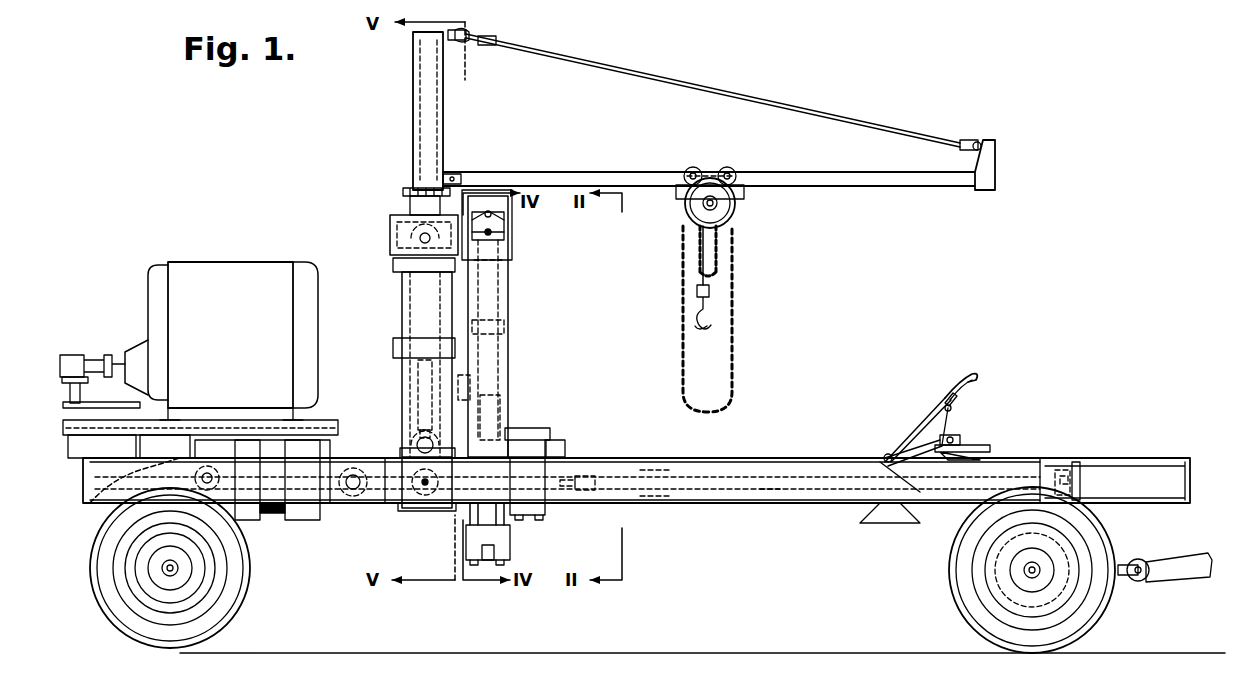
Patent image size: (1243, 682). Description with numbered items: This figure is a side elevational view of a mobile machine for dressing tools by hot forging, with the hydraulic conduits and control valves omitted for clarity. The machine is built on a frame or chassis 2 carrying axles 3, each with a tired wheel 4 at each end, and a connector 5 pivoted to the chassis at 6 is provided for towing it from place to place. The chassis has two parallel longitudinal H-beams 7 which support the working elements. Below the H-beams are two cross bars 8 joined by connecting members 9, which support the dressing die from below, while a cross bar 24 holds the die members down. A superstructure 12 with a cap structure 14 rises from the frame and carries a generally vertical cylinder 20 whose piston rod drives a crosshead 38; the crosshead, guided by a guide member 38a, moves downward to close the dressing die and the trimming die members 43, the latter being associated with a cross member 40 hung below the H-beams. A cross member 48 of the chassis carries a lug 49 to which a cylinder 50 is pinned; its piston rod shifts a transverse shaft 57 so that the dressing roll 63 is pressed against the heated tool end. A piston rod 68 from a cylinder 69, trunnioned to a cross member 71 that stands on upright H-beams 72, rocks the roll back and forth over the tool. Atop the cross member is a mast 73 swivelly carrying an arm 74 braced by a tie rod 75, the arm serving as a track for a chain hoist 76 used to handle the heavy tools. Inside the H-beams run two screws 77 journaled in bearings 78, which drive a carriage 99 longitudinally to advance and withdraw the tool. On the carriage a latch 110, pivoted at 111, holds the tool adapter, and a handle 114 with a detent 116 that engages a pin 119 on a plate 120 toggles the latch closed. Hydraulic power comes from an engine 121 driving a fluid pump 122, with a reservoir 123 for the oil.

The frame or chassis 2 is at (742, 457).
The axles 3 is at (170, 568).
The tired wheel 4 is at (200, 574).
The connector 5 is at (1190, 560).
The pivot 6 is at (1146, 560).
The H-beams 7 is at (700, 505).
The cross bars 8 is at (505, 547).
The connecting members 9 is at (472, 533).
The superstructure 12 is at (508, 356).
The cap structure 14 is at (508, 226).
The cylinder 20 is at (508, 290).
The cross bar 24 is at (498, 412).
The crosshead 38 is at (522, 430).
The guide member 38a is at (469, 380).
The cross member 40 is at (546, 530).
The trimming die members 43 is at (555, 453).
The cross member 48 is at (105, 506).
The lug 49 is at (186, 464).
The cylinder 50 is at (273, 513).
The shaft 57 is at (353, 503).
The dressing roll 63 is at (409, 509).
The piston rod 68 is at (418, 403).
The cylinder 69 is at (402, 300).
The cross member 71 is at (390, 238).
The upright H-beams 72 is at (402, 390).
The mast 73 is at (415, 128).
The arm 74 is at (779, 180).
The tie rod 75 is at (745, 98).
The chain hoist 76 is at (726, 203).
The screws 77 is at (770, 492).
The bearings 78 is at (582, 492).
The carriage 99 is at (890, 498).
The latch 110 is at (886, 452).
The pivot 111 is at (960, 439).
The handle 114 is at (973, 375).
The detent 116 is at (928, 424).
The pin 119 is at (955, 405).
The plate 120 is at (967, 423).
The engine 121 is at (221, 341).
The fluid pump 122 is at (78, 358).
The reservoir 123 is at (200, 439).